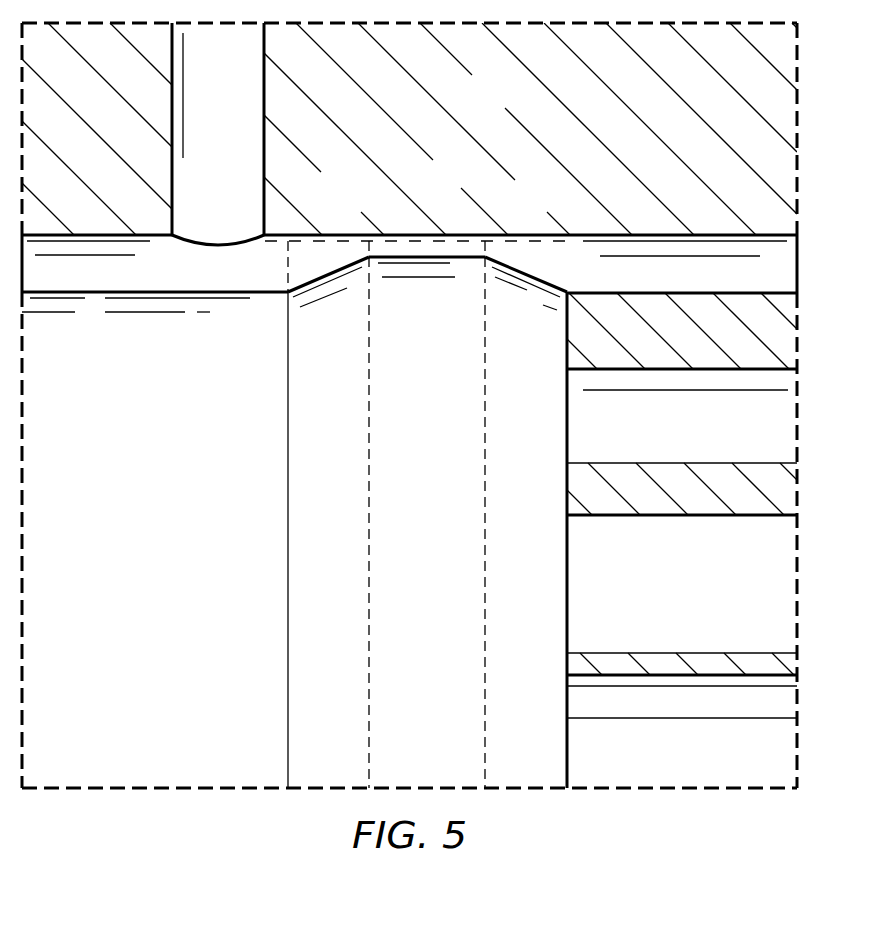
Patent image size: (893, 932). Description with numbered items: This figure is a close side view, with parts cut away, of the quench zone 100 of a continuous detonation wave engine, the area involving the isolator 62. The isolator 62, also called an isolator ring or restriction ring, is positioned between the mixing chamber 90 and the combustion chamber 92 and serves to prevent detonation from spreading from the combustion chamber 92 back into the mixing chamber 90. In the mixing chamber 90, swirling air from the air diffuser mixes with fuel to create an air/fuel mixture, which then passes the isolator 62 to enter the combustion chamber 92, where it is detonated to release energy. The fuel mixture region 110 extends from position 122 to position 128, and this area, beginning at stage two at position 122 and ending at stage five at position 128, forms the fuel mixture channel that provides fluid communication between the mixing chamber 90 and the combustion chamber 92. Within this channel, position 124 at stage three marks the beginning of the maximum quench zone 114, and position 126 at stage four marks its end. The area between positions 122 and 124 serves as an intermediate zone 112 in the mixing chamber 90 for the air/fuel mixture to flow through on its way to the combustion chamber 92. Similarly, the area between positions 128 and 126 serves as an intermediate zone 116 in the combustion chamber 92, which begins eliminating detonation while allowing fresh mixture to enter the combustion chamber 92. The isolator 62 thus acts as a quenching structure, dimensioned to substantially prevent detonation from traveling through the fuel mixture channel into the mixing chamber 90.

The isolator 62 is at (277, 383).
The mixing chamber 90 is at (773, 265).
The combustion chamber 92 is at (88, 270).
The quench zone 100 is at (194, 457).
The fuel mixture region 110 is at (441, 142).
The intermediate zone 112 is at (516, 260).
The maximum quench zone 114 is at (413, 257).
The intermediate zone 116 is at (323, 282).
The position 122 is at (567, 255).
The position 124 is at (484, 244).
The position 126 is at (368, 243).
The position 128 is at (287, 270).